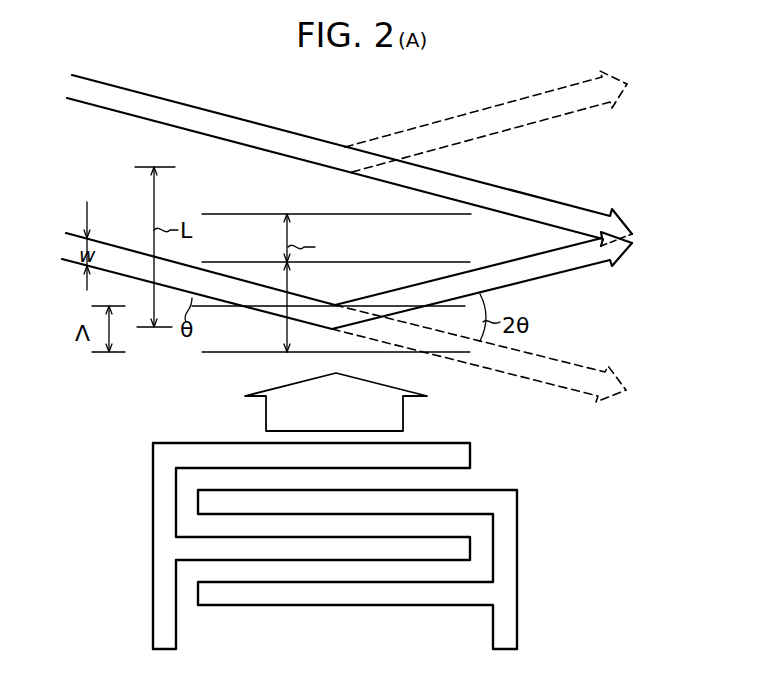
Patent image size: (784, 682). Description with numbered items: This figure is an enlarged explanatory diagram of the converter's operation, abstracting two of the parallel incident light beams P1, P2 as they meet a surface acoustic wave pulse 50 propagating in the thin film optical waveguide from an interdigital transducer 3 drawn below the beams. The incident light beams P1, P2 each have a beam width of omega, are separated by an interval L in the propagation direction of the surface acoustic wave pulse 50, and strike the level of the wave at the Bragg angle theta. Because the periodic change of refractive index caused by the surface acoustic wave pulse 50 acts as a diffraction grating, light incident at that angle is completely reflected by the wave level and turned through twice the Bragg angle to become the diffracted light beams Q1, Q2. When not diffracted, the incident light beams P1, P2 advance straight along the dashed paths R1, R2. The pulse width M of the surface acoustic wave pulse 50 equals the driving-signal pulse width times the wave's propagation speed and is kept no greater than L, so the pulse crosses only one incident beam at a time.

The surface acoustic wave pulse 50 is at (210, 353).
The interdigital transducer 3 is at (517, 565).
The incident light beam P1 is at (106, 250).
The incident light beam P2 is at (99, 107).
The diffracted light beam Q1 is at (550, 276).
The diffracted light beam Q2 is at (510, 122).
The straight-advancing light beam R1 is at (571, 373).
The straight-advancing light beam R2 is at (498, 212).